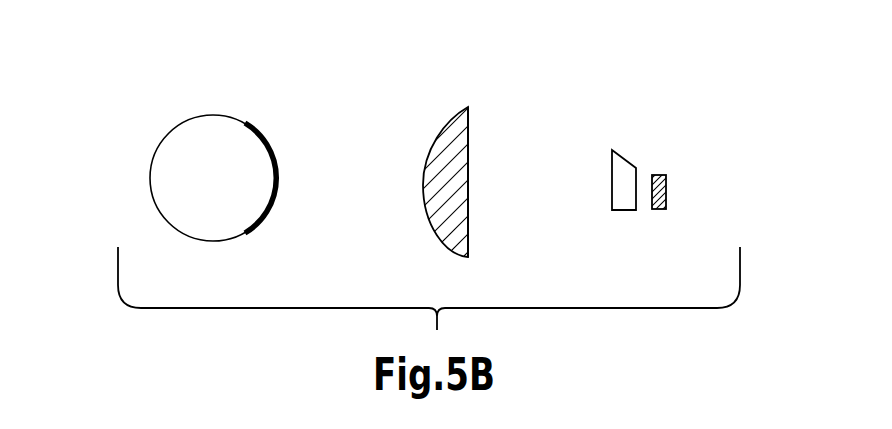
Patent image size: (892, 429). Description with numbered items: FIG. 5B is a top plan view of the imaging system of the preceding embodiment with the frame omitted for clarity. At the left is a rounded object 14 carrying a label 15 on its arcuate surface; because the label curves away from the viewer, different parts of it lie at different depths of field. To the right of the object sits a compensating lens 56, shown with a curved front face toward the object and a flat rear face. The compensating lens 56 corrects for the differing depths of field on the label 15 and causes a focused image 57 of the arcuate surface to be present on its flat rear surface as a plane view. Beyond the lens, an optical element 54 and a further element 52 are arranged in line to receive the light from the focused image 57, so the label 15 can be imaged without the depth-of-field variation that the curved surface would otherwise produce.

The spherical lens / ball 14 is at (187, 175).
The label 15 is at (278, 160).
The detector 52 is at (667, 193).
The prism 54 is at (612, 150).
The compensating lens 56 is at (433, 137).
The focused image 57 is at (469, 210).